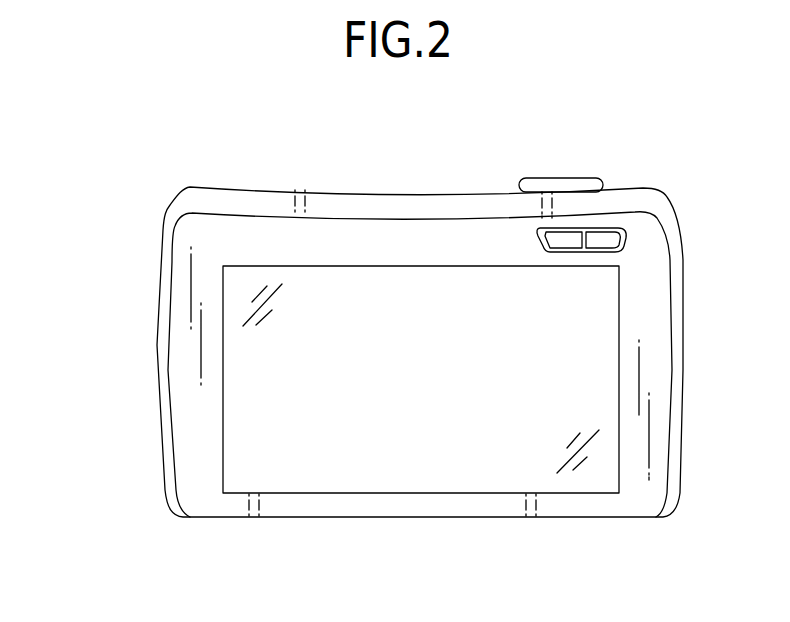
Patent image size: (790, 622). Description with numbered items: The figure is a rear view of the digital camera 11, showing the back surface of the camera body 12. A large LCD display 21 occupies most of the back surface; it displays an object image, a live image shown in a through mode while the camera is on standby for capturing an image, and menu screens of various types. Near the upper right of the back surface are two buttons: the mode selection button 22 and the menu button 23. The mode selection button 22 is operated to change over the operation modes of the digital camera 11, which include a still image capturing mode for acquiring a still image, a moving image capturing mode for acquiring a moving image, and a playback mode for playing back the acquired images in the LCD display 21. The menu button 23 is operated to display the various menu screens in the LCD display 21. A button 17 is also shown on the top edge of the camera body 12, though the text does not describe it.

The digital camera 11 is at (300, 173).
The camera body 12 is at (158, 345).
The shutter button 17 is at (562, 180).
The LCD display 21 is at (357, 467).
The mode selection button 22 is at (565, 240).
The menu button 23 is at (605, 238).